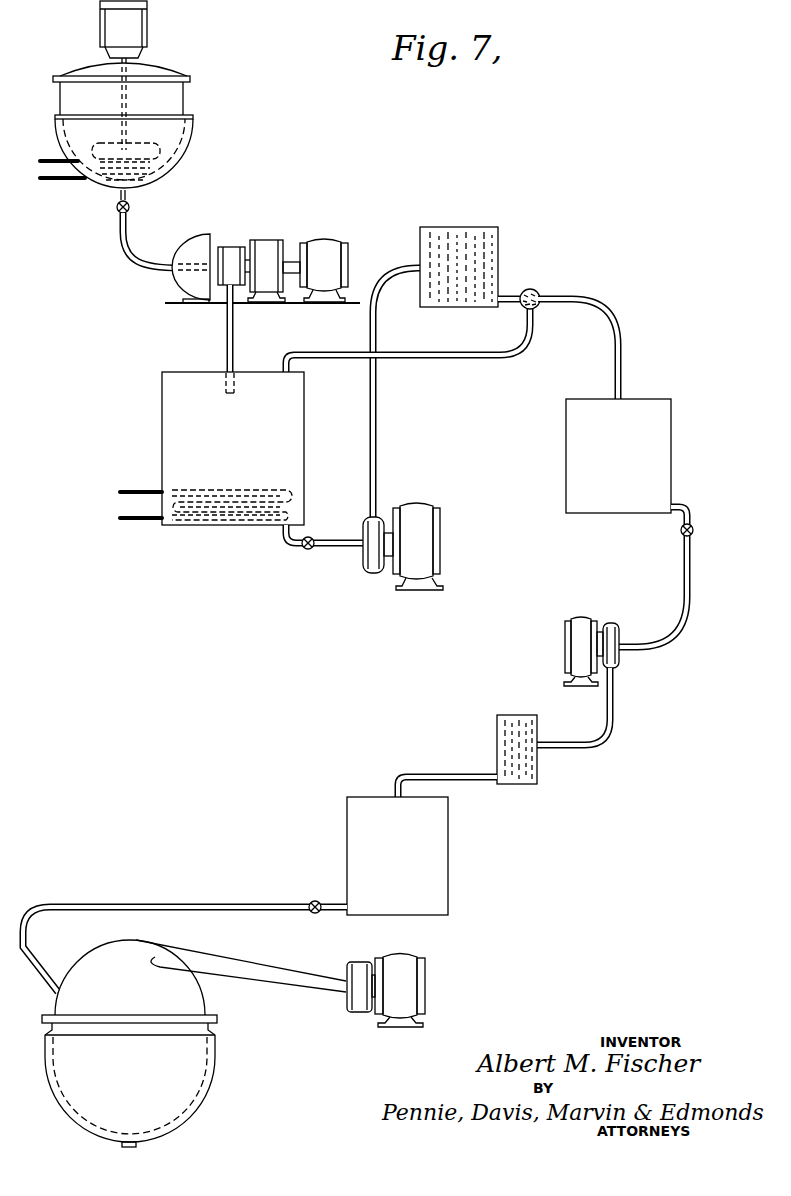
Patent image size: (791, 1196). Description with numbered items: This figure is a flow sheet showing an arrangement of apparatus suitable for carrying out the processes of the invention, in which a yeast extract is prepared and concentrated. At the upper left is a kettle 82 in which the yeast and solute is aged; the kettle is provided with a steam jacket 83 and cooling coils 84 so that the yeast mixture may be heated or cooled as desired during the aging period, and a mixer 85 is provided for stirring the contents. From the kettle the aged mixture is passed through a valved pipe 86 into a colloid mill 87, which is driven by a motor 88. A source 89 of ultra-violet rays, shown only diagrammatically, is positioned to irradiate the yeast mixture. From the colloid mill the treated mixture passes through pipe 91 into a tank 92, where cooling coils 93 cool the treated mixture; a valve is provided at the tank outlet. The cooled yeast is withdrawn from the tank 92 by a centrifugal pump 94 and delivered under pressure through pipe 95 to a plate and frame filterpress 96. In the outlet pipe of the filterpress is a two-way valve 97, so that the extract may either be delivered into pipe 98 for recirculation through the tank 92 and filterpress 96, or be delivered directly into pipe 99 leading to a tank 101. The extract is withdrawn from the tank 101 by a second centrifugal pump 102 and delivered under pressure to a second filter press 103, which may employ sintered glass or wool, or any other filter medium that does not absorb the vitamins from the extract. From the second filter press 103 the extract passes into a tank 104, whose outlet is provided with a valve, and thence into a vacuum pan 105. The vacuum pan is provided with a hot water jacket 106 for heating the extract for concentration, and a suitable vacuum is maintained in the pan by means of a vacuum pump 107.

The kettle 82 is at (185, 96).
The steam jacket 83 is at (188, 148).
The cooling coils 84 is at (102, 168).
The mixer 85 is at (153, 147).
The pipe 86 is at (127, 224).
The colloid mill 87 is at (265, 246).
The motor 88 is at (321, 246).
The source of ultra-violet rays 89 is at (187, 282).
The pipe 91 is at (224, 342).
The tank 92 is at (172, 429).
The cooling coils 93 is at (118, 516).
The centrifugal pump 94 is at (372, 574).
The pipe 95 is at (378, 412).
The plate and frame filterpress 96 is at (465, 226).
The two-way valve 97 is at (540, 292).
The pipe 98 is at (486, 359).
The pipe 99 is at (622, 340).
The tank 101 is at (665, 447).
The centrifugal pump 102 is at (612, 621).
The filter press 103 is at (537, 768).
The tank 104 is at (436, 857).
The vacuum pan 105 is at (186, 1002).
The hot water jacket 106 is at (190, 1077).
The vacuum pump 107 is at (425, 970).